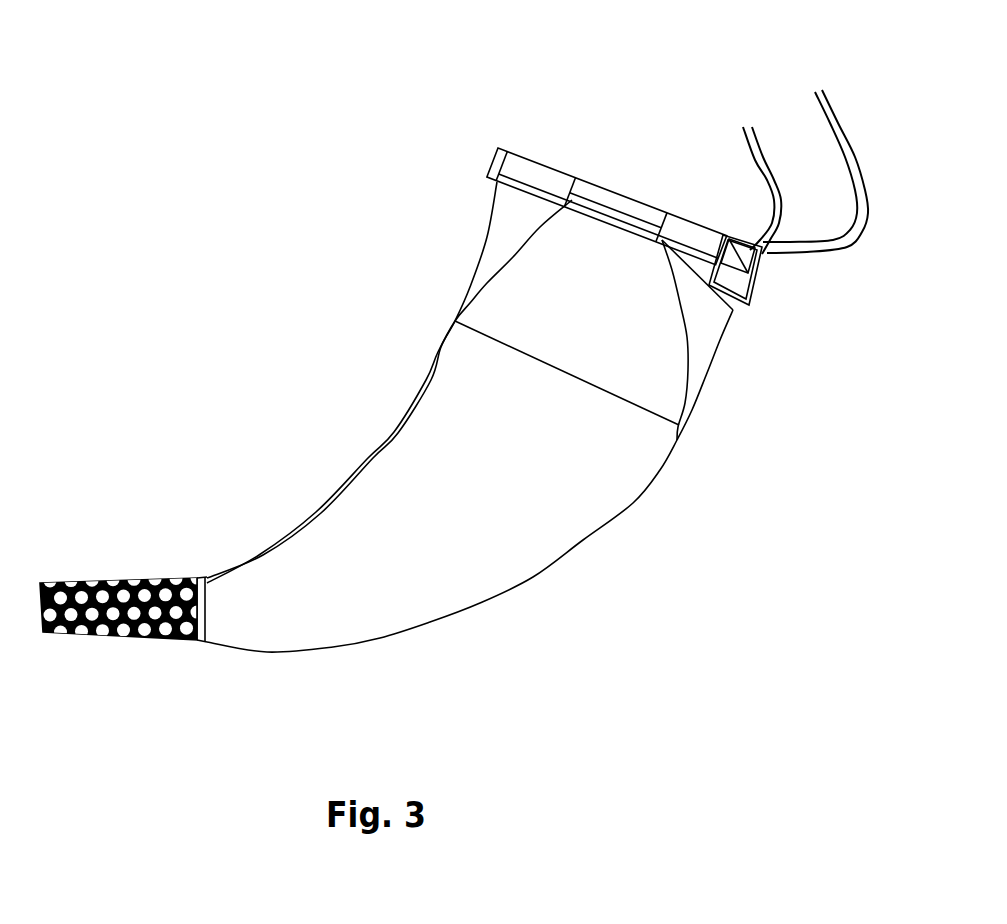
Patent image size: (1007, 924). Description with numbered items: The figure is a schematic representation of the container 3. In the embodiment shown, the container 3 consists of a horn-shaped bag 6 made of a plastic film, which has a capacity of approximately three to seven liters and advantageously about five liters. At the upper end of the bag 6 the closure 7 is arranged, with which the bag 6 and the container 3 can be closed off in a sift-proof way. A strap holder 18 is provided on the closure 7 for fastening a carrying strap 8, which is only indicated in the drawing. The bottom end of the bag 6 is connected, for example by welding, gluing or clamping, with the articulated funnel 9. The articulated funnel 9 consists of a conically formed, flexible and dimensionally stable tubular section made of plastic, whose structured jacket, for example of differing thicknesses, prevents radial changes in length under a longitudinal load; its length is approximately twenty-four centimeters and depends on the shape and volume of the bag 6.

The container 3 is at (186, 270).
The horn-shaped bag 6 is at (547, 502).
The closure 7 is at (543, 180).
The carrying strap 8 is at (767, 194).
The articulated funnel 9 is at (87, 597).
The strap holder 18 is at (727, 267).